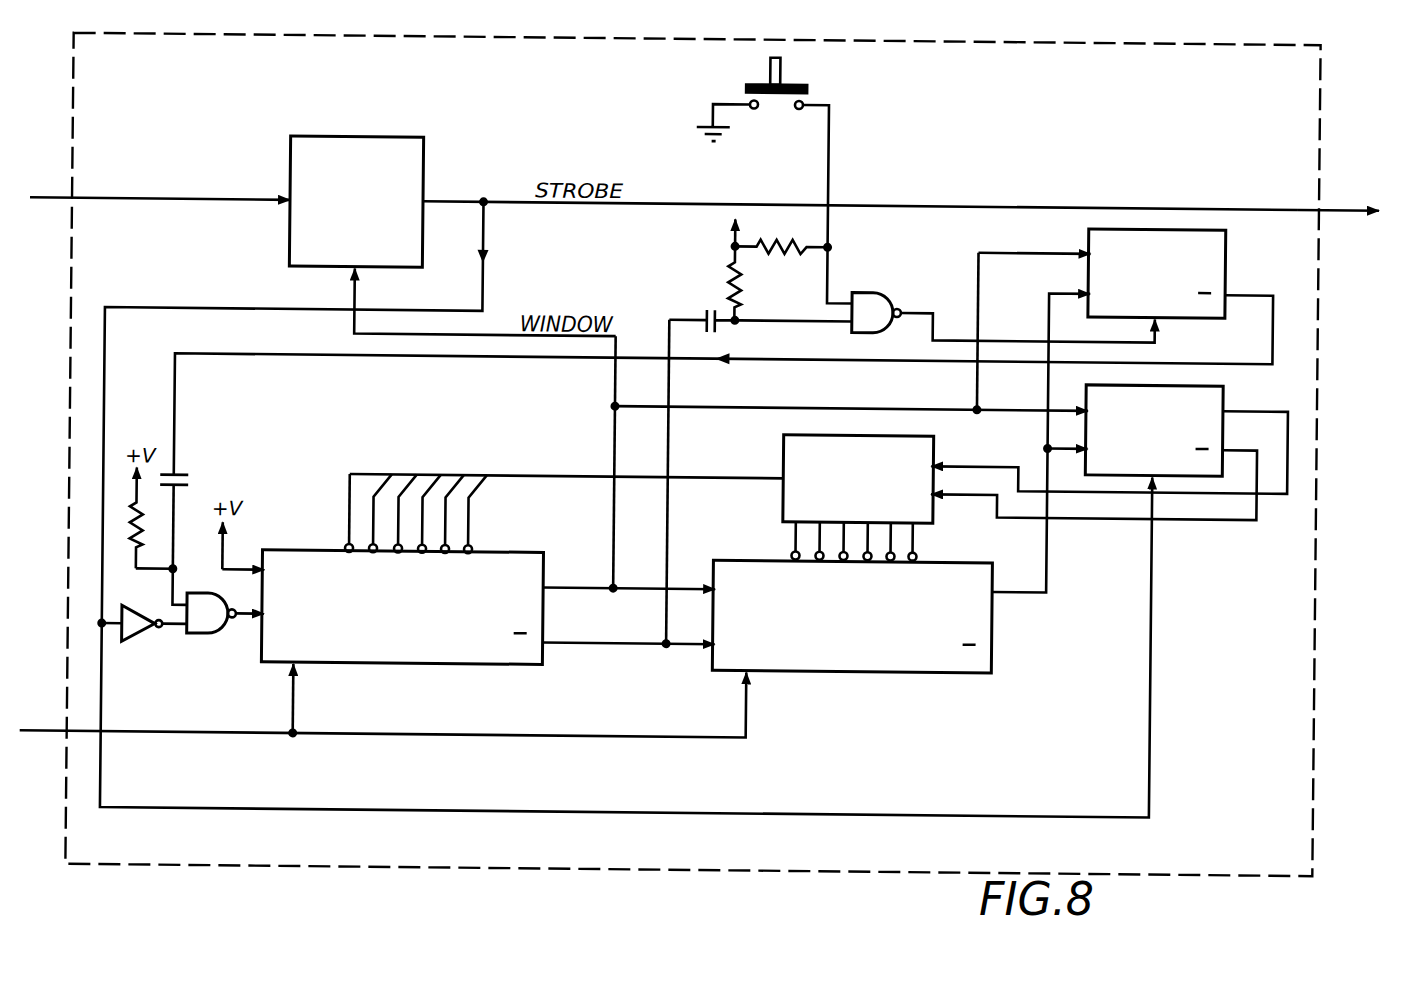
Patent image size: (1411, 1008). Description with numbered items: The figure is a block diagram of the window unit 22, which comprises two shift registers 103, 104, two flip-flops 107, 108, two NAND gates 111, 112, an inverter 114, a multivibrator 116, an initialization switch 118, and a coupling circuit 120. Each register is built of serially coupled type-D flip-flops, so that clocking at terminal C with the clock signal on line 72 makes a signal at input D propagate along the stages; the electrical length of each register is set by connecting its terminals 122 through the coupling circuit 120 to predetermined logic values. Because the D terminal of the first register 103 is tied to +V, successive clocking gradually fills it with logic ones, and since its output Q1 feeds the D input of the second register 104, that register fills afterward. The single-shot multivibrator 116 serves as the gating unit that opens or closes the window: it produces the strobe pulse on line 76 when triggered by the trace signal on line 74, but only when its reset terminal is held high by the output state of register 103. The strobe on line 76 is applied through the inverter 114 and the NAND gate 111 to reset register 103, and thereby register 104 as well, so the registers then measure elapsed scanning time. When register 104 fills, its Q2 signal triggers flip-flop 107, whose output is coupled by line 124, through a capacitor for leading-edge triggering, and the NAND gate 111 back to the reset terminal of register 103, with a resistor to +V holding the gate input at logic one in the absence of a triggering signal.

The window unit 22 is at (628, 866).
The clock signal line 72 is at (42, 732).
The trace signal line 74 is at (64, 192).
The strobe pulse line 76 is at (1345, 199).
The shift register 103 is at (454, 661).
The shift register 104 is at (905, 664).
The flip-flop 107 is at (1230, 231).
The flip-flop 108 is at (1232, 383).
The NAND gate 111 is at (211, 631).
The NAND gate 112 is at (873, 284).
The inverter 114 is at (136, 639).
The multivibrator 116 is at (384, 131).
The initialization switch 118 is at (771, 100).
The coupling circuit 120 is at (787, 432).
The terminals 122 is at (349, 540).
The line 124 is at (518, 352).